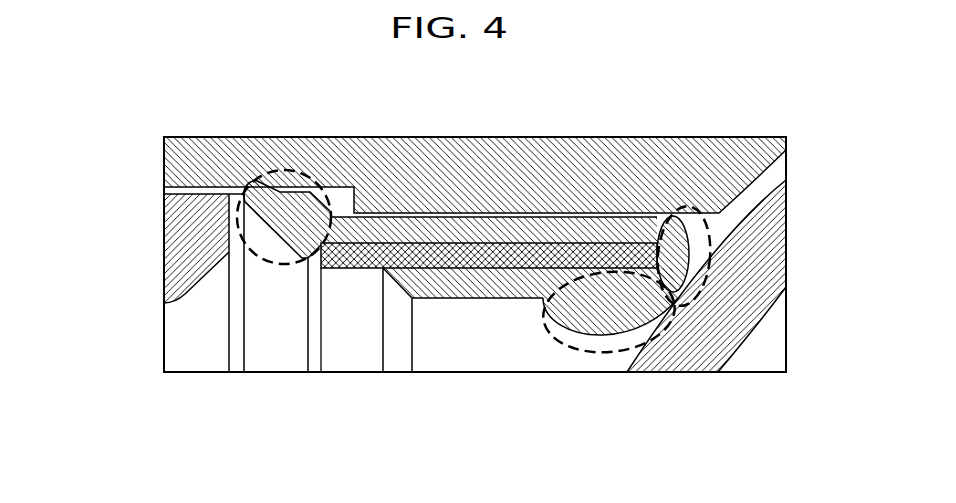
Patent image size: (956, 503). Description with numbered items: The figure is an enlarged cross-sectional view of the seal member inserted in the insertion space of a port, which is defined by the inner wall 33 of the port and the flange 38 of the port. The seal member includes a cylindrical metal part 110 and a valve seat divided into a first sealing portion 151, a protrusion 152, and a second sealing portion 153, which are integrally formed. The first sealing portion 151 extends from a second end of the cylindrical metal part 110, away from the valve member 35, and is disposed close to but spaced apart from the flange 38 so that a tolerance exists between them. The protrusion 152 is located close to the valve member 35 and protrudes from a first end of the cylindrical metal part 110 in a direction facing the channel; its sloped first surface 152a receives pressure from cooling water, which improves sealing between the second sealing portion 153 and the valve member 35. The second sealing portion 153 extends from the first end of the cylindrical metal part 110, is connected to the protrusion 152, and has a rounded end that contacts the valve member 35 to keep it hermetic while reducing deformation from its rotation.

The inner wall 33 is at (498, 177).
The valve member 35 is at (737, 303).
The flange 38 is at (192, 238).
The cylindrical metal part 110 is at (458, 260).
The first sealing portion 151 is at (288, 168).
The protrusion 152 is at (573, 347).
The first surface 152a is at (547, 310).
The second sealing portion 153 is at (705, 212).